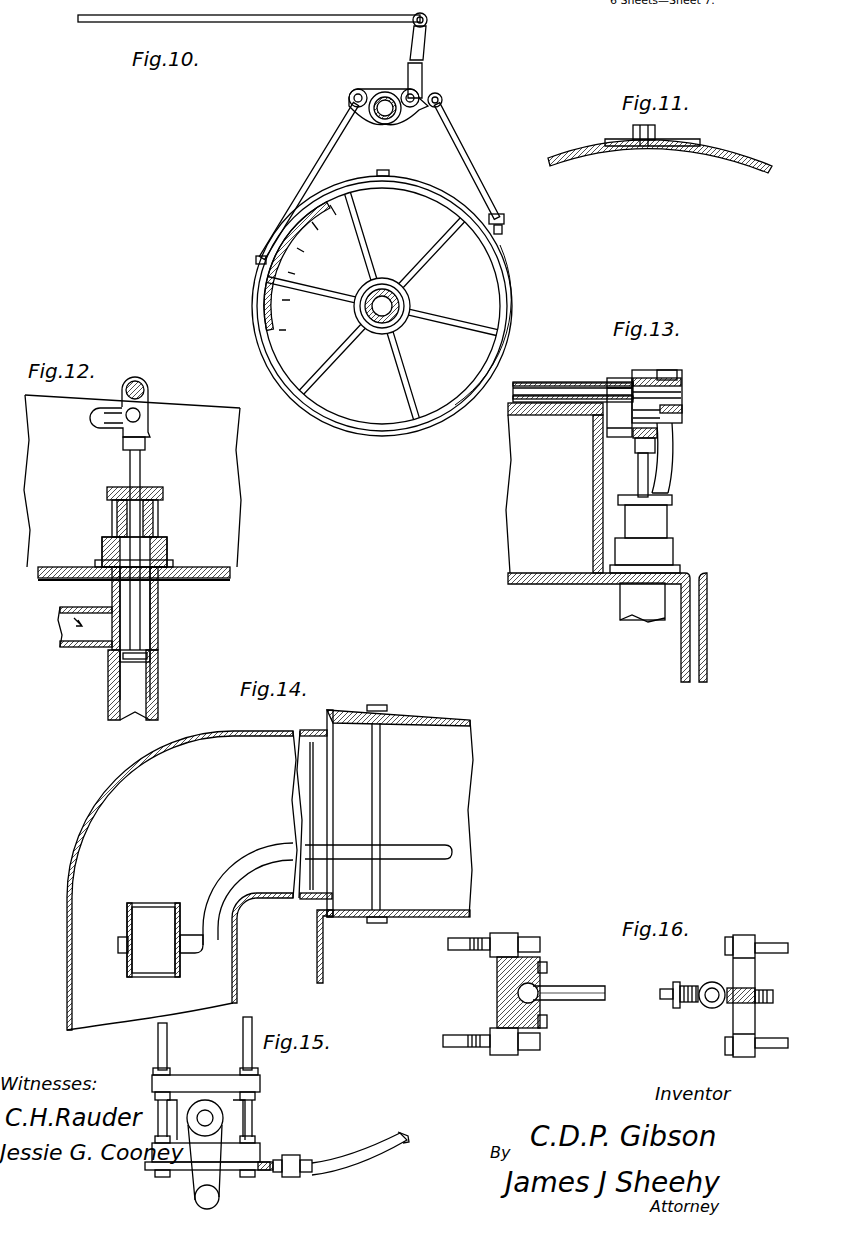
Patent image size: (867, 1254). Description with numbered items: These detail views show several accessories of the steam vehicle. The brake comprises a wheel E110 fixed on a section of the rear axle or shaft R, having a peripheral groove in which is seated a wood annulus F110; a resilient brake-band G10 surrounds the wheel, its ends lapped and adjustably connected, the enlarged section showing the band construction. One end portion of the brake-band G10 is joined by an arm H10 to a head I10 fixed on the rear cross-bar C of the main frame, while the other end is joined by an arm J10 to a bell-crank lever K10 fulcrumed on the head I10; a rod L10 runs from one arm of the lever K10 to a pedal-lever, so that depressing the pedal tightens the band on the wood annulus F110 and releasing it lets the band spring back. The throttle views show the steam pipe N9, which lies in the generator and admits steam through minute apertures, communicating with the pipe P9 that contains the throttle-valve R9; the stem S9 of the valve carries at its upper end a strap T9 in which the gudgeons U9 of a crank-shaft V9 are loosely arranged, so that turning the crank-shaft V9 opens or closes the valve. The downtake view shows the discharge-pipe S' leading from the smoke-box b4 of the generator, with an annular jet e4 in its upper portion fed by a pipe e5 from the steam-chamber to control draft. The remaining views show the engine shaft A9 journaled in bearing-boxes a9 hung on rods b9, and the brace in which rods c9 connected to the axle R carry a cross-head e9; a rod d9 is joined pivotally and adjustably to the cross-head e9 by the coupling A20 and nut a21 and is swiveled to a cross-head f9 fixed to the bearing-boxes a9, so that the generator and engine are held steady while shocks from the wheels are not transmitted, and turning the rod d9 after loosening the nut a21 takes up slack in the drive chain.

In FIG. 10, the rod L10 is at (250, 22).
In FIG. 10, the bell-crank lever K10 is at (418, 80).
In FIG. 10, the head I10 is at (349, 98).
In FIG. 10, the rear cross-bar C is at (388, 112).
In FIG. 10, the arm H10 is at (325, 157).
In FIG. 10, the arm J10 is at (481, 150).
In FIG. 10, the wood annulus F110 is at (266, 268).
In FIG. 10, the brake-band G10 is at (507, 255).
In FIG. 11, the brake-band G10 is at (663, 150).
In FIG. 10, the axle or shaft R is at (384, 298).
In FIG. 10, the wheel E110 is at (382, 303).
In FIG. 12, the gudgeons U9 is at (142, 381).
In FIG. 13, the gudgeons U9 is at (645, 390).
In FIG. 12, the strap T9 is at (150, 428).
In FIG. 13, the strap T9 is at (655, 447).
In FIG. 12, the stem S9 is at (140, 600).
In FIG. 13, the stem S9 is at (643, 478).
In FIG. 12, the pipe P9 is at (158, 640).
In FIG. 12, the pipe N9 is at (78, 640).
In FIG. 12, the throttle-valve R9 is at (148, 662).
In FIG. 13, the crank-shaft V9 is at (535, 382).
In FIG. 14, the discharge-pipe S' is at (200, 880).
In FIG. 14, the smoke-box b4 is at (400, 814).
In FIG. 14, the pipe e5 is at (395, 845).
In FIG. 14, the annular jet e4 is at (160, 975).
In FIG. 15, the rods b9 is at (247, 1045).
In FIG. 15, the bearing-boxes a9 is at (250, 1090).
In FIG. 15, the shaft A9 is at (227, 1122).
In FIG. 15, the rod d9 is at (380, 1140).
In FIG. 16, the rod d9 is at (597, 1000).
In FIG. 16, the cross-head f9 is at (497, 990).
In FIG. 16, the nut a21 is at (672, 1008).
In FIG. 16, the coupling (stay) A20 is at (690, 1002).
In FIG. 16, the cross-head e9 is at (740, 1005).
In FIG. 16, the rods c9 is at (770, 1048).